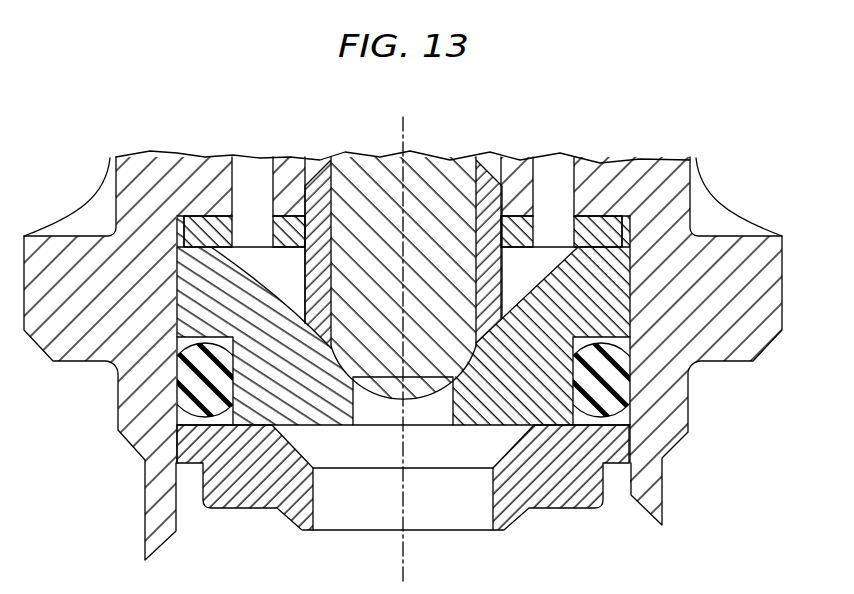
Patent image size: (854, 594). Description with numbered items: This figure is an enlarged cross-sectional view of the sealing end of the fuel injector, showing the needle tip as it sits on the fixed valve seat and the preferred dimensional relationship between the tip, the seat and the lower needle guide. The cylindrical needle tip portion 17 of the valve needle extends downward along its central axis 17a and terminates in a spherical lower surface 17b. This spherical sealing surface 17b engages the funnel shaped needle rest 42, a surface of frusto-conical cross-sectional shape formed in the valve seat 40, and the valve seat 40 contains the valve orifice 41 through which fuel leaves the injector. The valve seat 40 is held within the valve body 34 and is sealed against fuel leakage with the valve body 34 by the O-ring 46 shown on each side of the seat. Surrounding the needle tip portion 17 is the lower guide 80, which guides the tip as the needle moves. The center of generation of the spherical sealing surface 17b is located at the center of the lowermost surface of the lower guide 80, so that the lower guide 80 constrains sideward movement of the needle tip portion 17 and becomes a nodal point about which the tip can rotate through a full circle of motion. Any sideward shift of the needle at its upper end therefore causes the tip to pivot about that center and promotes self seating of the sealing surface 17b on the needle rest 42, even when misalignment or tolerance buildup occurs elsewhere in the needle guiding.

The needle tip portion 17 is at (442, 167).
The bolt axis 17a is at (402, 136).
The spherical lower surface 17b is at (349, 366).
The valve body 34 is at (769, 275).
The valve seat 40 is at (190, 310).
The valve orifice 41 is at (374, 410).
The needle rest 42 is at (257, 278).
The O-ring 46 is at (620, 402).
The lower guide 80 is at (594, 230).